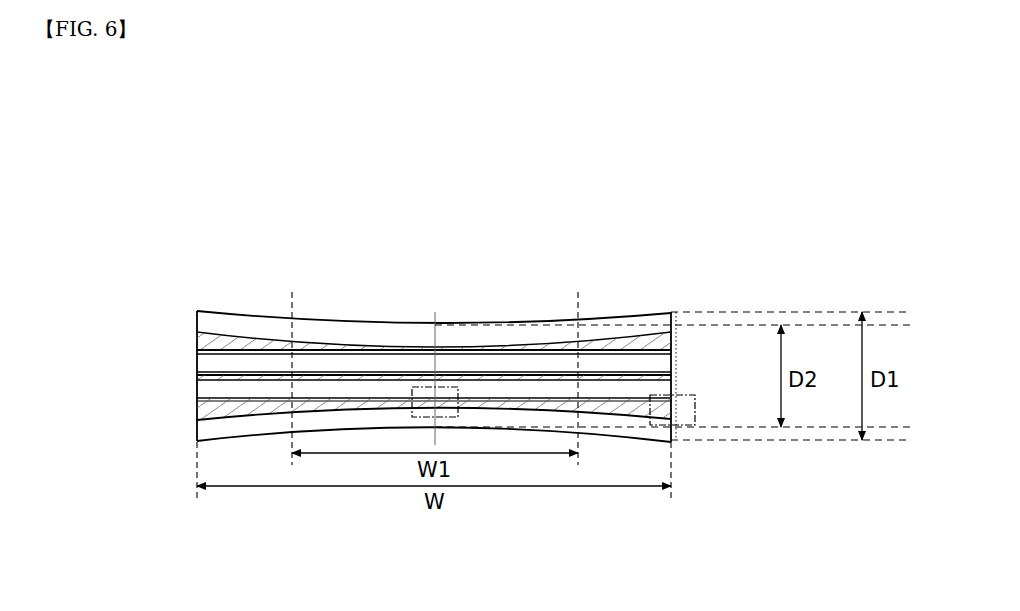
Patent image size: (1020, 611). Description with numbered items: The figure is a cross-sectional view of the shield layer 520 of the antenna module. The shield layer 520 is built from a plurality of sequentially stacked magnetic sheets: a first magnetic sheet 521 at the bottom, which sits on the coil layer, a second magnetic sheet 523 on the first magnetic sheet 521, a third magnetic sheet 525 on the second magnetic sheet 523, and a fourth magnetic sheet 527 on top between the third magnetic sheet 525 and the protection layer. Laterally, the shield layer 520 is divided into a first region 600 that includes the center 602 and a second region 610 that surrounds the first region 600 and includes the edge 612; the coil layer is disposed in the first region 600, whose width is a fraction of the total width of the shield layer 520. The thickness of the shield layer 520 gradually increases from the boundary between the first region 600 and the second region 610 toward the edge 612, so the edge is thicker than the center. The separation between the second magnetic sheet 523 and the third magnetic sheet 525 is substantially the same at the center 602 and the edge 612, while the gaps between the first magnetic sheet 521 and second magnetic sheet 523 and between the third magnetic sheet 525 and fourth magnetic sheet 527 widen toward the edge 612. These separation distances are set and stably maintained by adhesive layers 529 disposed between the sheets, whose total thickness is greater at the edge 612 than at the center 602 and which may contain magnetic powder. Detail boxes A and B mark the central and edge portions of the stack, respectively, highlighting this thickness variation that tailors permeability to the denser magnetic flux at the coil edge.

The shield layer 520 is at (622, 158).
The first magnetic sheet 521 is at (197, 425).
The second magnetic sheet 523 is at (197, 381).
The third magnetic sheet 525 is at (197, 356).
The fourth magnetic sheet 527 is at (197, 317).
The adhesive layers 529 is at (642, 343).
The first region 600 is at (578, 297).
The center 602 is at (444, 323).
The second region 610 is at (292, 297).
The edge 612 is at (673, 312).
The central portion A is at (413, 387).
The edge portion B is at (679, 395).